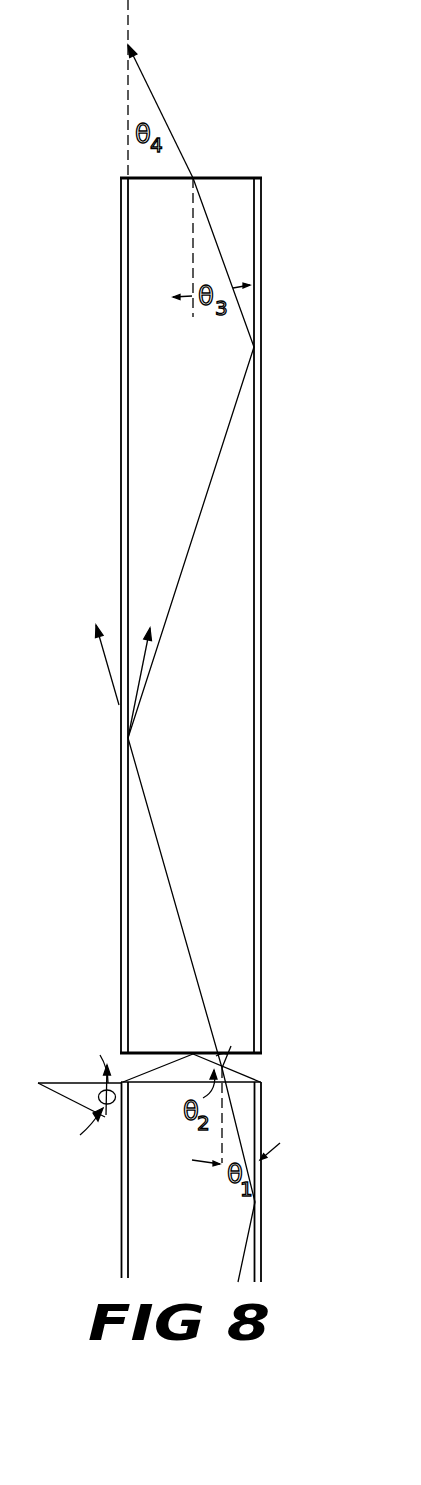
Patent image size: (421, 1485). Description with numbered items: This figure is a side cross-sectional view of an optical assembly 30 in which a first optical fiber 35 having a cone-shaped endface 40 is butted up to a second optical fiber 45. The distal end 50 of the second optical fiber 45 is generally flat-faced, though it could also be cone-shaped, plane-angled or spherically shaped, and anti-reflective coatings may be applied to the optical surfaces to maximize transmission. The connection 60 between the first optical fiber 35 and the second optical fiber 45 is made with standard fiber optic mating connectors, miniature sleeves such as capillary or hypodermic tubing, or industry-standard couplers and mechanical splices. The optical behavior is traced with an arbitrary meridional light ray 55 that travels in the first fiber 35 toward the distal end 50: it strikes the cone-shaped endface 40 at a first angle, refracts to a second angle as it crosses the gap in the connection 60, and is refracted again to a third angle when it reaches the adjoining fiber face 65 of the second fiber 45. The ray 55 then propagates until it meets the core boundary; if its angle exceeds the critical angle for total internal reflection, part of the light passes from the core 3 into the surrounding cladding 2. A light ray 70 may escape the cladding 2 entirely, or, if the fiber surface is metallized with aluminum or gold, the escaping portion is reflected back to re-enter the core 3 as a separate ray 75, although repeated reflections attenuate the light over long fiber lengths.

The optical assembly 30 is at (100, 141).
The cladding 2 is at (127, 293).
The core 3 is at (143, 428).
The second optical fiber 45 is at (142, 565).
The distal end 50 is at (218, 177).
The light ray 55 is at (153, 100).
The adjoining fiber face 65 is at (245, 1060).
The escaping light ray 70 is at (107, 670).
The separate ray 75 is at (137, 675).
The cone-shaped endface 40 is at (140, 1073).
The connection 60 is at (255, 1072).
The first optical fiber 35 is at (143, 1228).